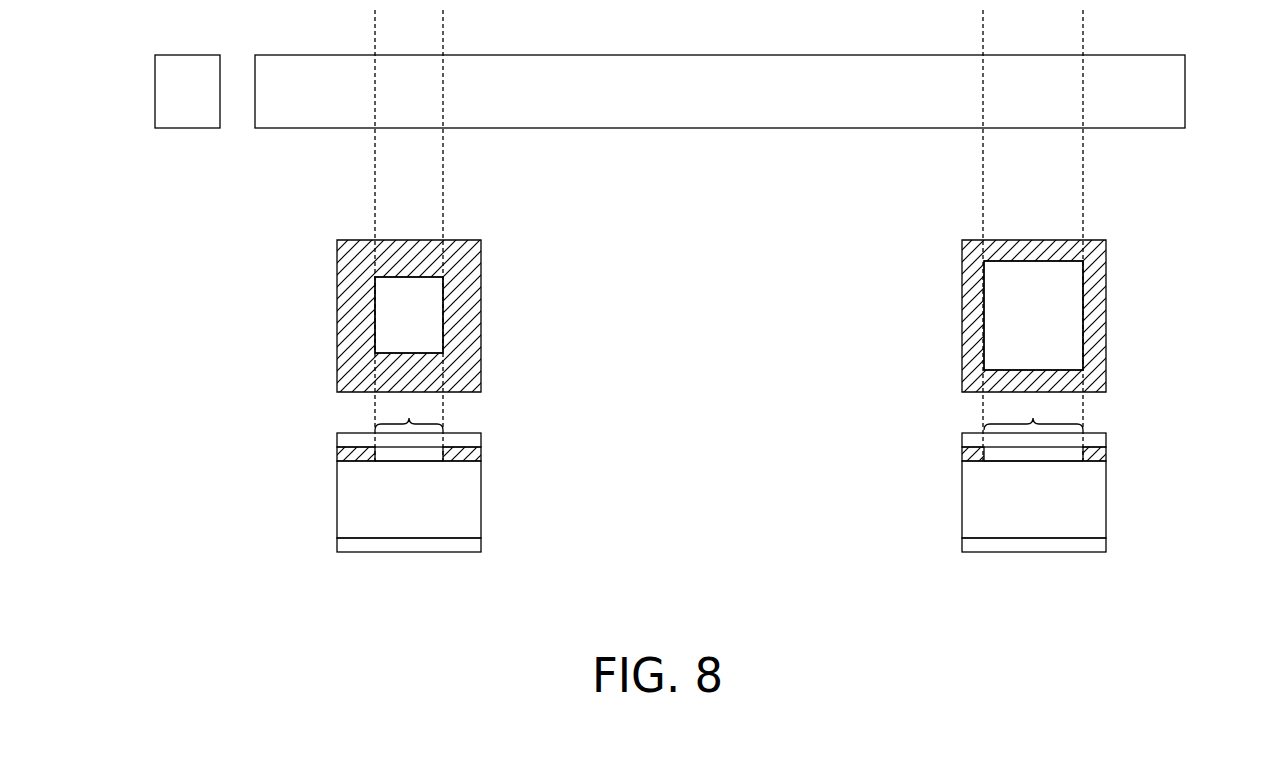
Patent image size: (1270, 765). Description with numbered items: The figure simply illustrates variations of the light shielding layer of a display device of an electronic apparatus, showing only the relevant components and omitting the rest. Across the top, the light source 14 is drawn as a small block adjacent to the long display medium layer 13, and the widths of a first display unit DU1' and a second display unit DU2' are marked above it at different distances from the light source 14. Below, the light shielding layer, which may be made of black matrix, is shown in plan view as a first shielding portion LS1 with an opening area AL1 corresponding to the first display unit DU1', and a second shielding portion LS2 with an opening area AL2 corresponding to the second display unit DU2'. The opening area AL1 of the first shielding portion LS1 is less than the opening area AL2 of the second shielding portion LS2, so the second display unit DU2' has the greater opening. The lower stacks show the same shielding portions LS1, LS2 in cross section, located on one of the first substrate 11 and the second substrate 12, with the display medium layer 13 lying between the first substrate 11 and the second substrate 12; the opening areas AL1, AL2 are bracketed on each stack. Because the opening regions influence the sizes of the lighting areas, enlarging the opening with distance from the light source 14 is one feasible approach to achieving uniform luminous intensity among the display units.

The first substrate 11 is at (472, 550).
The second substrate 12 is at (472, 446).
The display medium layer 13 is at (1163, 93).
The light source 14 is at (178, 93).
The first shielding portion LS1 is at (464, 348).
The second shielding portion LS2 is at (1090, 348).
The opening area of the first shielding portion AL1 is at (418, 312).
The opening area of the second shielding portion AL2 is at (1048, 312).
The first display unit DU1' is at (409, 16).
The second display unit DU2' is at (1033, 16).